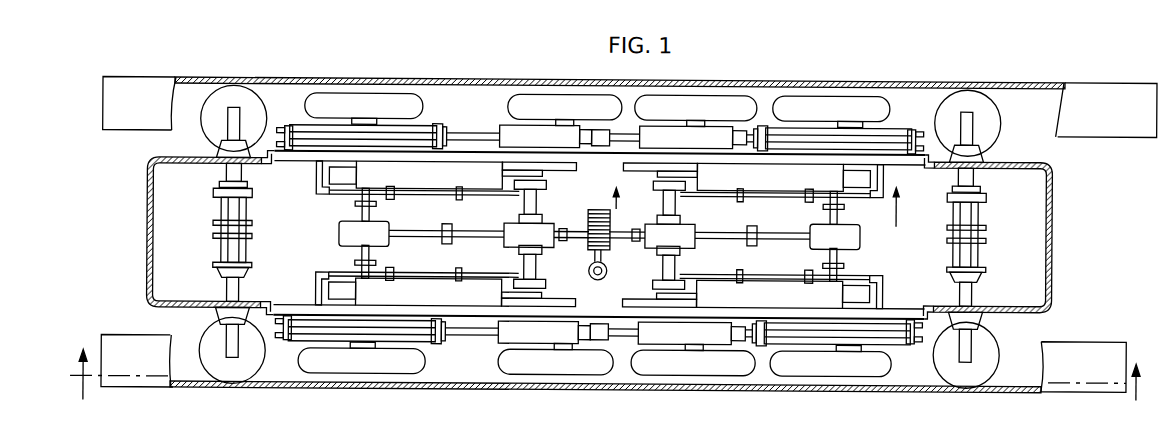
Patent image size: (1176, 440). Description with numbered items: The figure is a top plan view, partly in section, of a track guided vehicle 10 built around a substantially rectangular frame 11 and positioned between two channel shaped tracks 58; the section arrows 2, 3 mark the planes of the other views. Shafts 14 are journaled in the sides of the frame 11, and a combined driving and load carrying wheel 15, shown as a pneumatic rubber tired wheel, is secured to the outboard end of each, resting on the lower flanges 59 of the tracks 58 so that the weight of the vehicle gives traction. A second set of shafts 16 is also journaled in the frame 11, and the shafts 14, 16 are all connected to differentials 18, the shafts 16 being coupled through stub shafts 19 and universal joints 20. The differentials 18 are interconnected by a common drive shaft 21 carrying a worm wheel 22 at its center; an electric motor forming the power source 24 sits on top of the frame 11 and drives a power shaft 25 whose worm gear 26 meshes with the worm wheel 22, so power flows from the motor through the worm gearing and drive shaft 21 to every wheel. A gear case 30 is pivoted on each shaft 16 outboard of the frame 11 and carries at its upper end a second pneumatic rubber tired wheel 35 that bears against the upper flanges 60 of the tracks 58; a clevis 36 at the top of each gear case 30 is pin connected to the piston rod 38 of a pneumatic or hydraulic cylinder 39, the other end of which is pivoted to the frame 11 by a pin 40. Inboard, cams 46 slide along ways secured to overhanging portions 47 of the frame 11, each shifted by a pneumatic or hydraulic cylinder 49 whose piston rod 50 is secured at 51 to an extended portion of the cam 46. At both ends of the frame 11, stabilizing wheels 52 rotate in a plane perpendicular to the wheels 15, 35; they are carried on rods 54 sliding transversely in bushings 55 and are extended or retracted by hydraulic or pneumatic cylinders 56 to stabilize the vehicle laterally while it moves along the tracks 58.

The section line 2- 2 is at (605, 377).
The section line 3- 3 is at (756, 205).
The track guided vehicle 10 is at (140, 190).
The frame 11 is at (150, 243).
The shafts 14 is at (363, 203).
The combined driving and load carrying wheel 15 is at (331, 97).
The second set of shafts 16 is at (508, 168).
The differentials 18 is at (341, 230).
The stub shafts 19 is at (546, 206).
The universal joints 20 is at (547, 182).
The common drive shaft 21 is at (492, 236).
The worm wheel 22 is at (590, 215).
The power source 24 is at (480, 437).
The power shaft 25 is at (598, 277).
The worm gear 26 is at (591, 272).
The gear case 30 is at (510, 124).
The pneumatic rubber tired wheel 35 is at (527, 98).
The clevis 36 is at (612, 128).
The piston rod 38 is at (451, 122).
The pneumatic or hydraulic cylinder 39 is at (400, 130).
The pin 40 is at (285, 122).
The cam 46 is at (359, 171).
The overhanging portion 47 is at (460, 194).
The pneumatic or hydraulic cylinder 49 is at (393, 197).
The piston rod 50 is at (330, 188).
The securing point 51 is at (317, 184).
The stabilizing wheels 52 is at (226, 92).
The rods 54 is at (230, 125).
The bushings 55 is at (221, 159).
The hydraulic or pneumatic cylinders 56 is at (229, 211).
The tracks 58 is at (1027, 82).
The lower flanges 59 is at (1053, 134).
The upper flanges 60 is at (1135, 127).